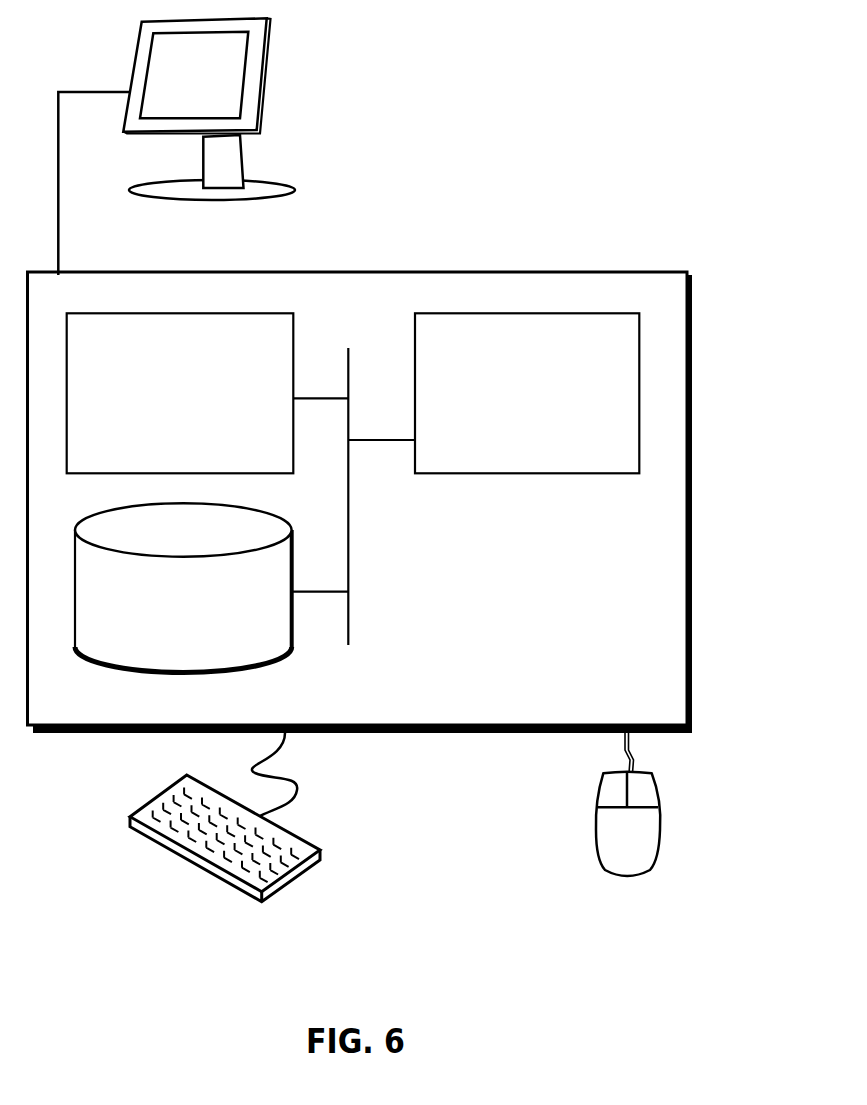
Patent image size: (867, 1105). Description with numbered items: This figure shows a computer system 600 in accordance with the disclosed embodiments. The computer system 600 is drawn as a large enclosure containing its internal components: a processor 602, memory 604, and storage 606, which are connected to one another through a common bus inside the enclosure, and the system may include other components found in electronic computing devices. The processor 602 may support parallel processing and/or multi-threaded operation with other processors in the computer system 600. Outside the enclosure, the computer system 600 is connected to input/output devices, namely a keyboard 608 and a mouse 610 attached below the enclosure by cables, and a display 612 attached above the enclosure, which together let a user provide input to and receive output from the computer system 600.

The computer system 600 is at (403, 250).
The processor 602 is at (509, 406).
The memory 604 is at (159, 404).
The storage 606 is at (208, 617).
The keyboard 608 is at (150, 835).
The mouse 610 is at (648, 846).
The display 612 is at (209, 122).